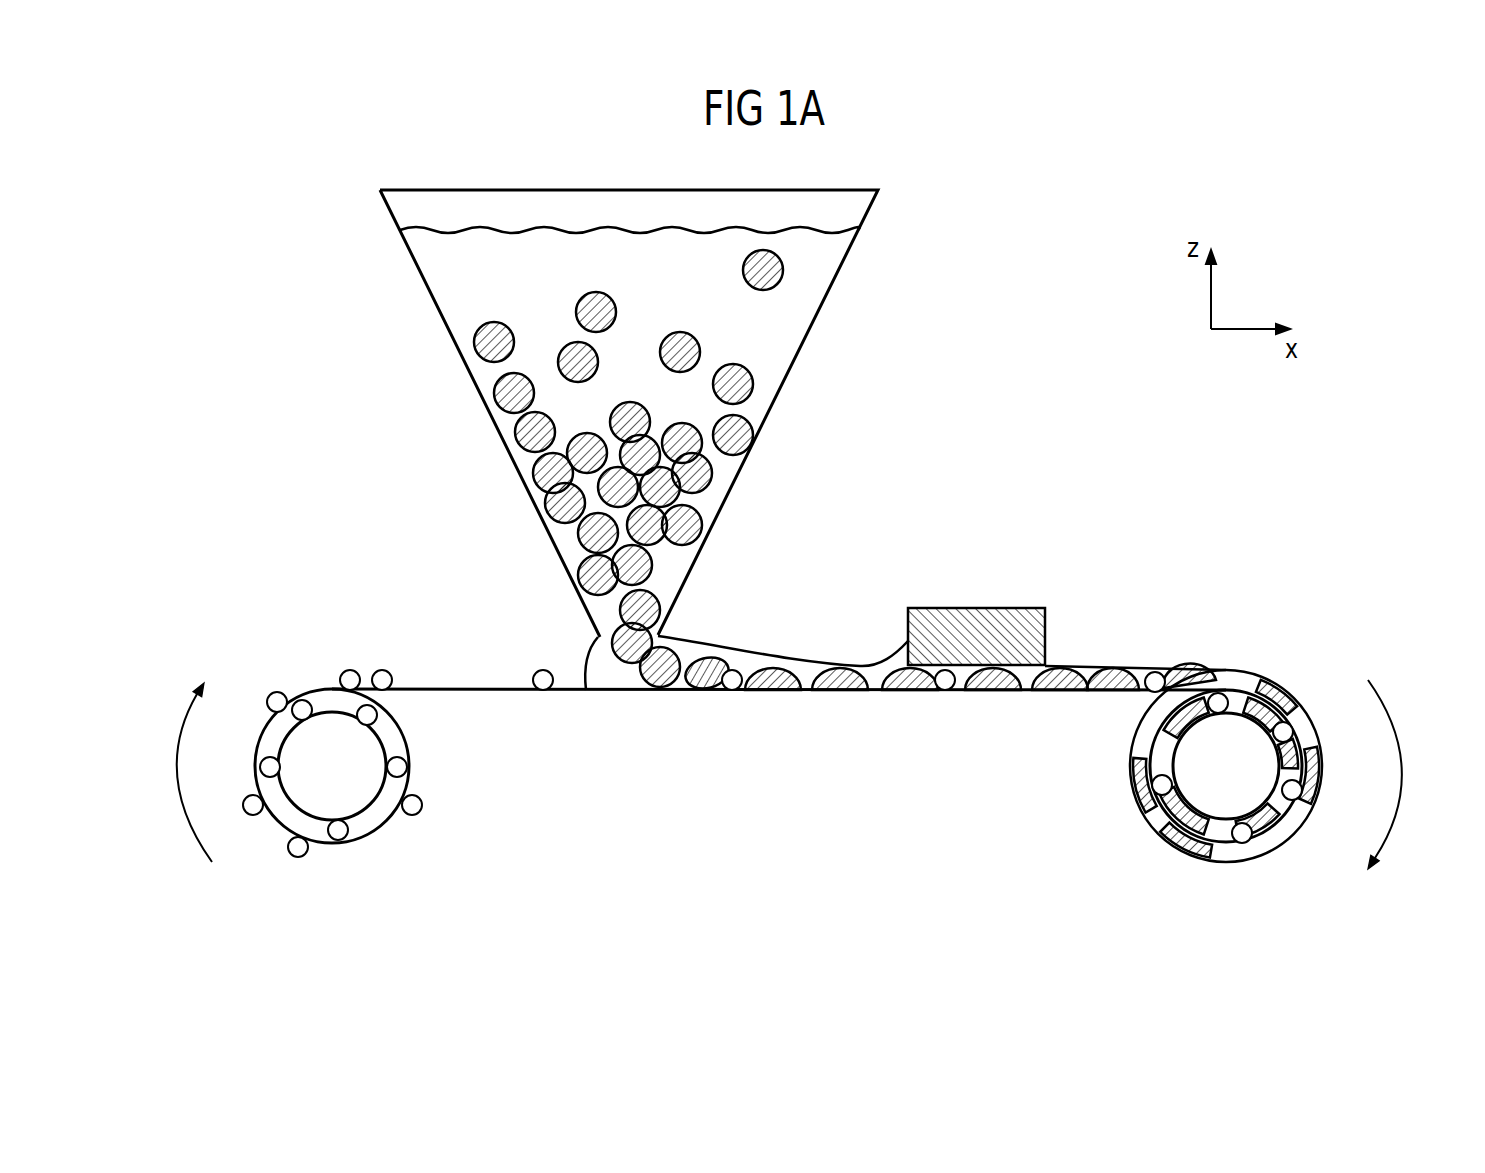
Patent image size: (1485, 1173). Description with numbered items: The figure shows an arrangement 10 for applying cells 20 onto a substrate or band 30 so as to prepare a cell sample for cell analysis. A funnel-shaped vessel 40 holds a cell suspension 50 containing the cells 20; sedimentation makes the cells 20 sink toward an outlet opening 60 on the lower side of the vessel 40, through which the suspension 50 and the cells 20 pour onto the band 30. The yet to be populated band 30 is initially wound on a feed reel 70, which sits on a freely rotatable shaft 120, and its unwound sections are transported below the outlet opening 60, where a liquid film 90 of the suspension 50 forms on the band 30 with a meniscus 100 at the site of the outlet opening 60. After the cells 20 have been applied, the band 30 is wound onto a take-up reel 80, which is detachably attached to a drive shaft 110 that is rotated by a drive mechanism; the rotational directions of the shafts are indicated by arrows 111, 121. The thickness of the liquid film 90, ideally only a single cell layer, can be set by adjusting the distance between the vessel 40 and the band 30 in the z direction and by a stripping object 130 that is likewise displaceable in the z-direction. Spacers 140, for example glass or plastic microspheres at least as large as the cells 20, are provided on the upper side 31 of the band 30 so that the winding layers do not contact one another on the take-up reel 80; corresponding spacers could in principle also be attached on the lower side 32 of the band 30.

The arrangement 10 is at (277, 474).
The cells 20 is at (770, 273).
The substrate or band 30 is at (452, 687).
The upper side of the band 31 is at (513, 676).
The lower side of the band 32 is at (513, 704).
The funnel-shaped vessel 40 is at (870, 205).
The cell suspension 50 is at (435, 272).
The outlet opening 60 is at (600, 637).
The feed reel 70 is at (375, 864).
The take-up reel 80 is at (1192, 886).
The liquid film 90 is at (1085, 675).
The meniscus 100 is at (610, 672).
The drive shaft 110 is at (1227, 733).
The arrow 111 is at (1398, 733).
The rotatable shaft 120 is at (328, 730).
The arrow 121 is at (178, 772).
The stripping object 130 is at (972, 620).
The spacers 140 is at (382, 670).